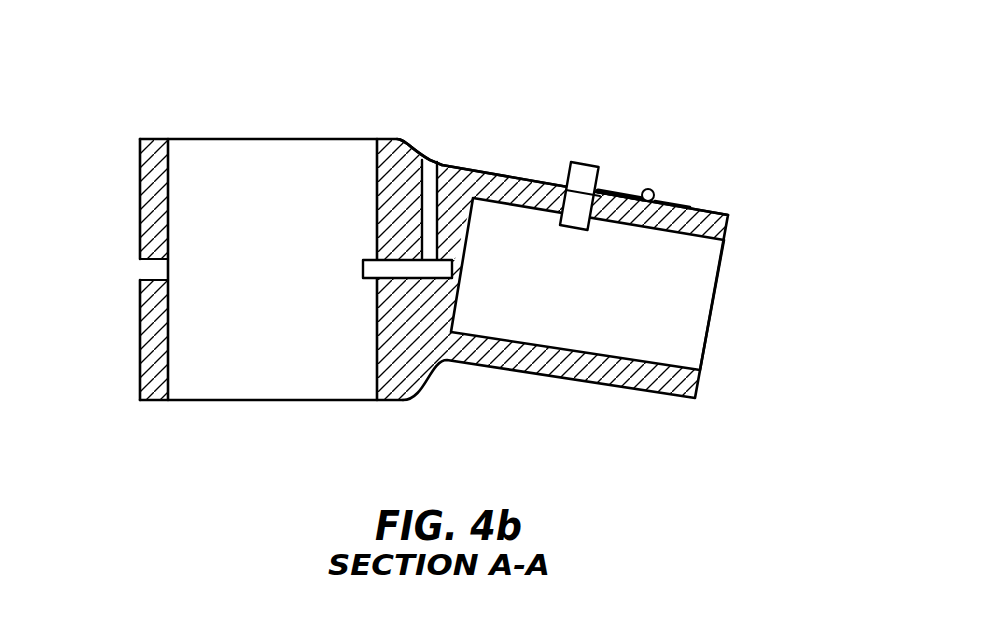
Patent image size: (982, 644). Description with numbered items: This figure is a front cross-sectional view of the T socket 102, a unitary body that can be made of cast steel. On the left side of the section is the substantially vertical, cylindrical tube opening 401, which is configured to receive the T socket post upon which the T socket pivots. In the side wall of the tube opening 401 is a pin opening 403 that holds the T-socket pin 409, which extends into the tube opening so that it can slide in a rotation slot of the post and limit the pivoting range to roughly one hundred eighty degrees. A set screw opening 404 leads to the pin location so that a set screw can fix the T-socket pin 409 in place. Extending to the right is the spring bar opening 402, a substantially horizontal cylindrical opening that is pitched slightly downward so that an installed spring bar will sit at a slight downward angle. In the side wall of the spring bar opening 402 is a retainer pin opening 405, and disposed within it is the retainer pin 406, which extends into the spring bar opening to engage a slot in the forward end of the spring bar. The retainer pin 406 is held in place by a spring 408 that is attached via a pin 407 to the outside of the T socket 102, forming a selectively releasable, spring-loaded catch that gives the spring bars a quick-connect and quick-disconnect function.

The T socket 102 is at (486, 120).
The tube opening 401 is at (219, 153).
The spring bar opening 402 is at (665, 338).
The pin opening 403 is at (460, 268).
The set screw opening 404 is at (435, 166).
The retainer pin opening 405 is at (623, 193).
The retainer pin 406 is at (583, 162).
The pin 407 is at (663, 196).
The spring 408 is at (654, 194).
The T-socket pin 409 is at (375, 262).